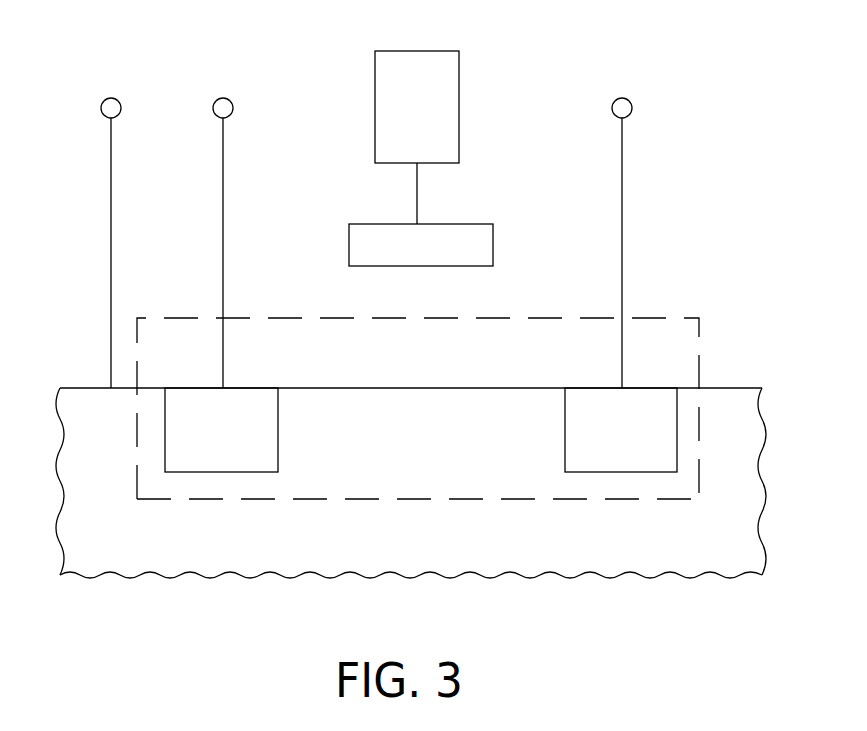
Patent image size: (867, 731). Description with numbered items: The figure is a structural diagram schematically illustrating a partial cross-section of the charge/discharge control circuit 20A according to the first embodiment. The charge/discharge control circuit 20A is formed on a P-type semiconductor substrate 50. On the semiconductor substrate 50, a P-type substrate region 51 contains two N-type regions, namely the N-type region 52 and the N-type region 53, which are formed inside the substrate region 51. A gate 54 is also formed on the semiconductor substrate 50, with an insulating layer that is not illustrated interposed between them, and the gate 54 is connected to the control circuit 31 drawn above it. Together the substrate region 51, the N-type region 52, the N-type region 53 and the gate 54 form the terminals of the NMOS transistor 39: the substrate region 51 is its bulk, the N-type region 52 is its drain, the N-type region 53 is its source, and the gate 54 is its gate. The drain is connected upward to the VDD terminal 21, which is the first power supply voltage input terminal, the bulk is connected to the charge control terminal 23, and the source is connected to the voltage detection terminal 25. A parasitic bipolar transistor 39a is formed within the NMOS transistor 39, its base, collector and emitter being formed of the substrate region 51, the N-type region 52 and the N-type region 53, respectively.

The charge/discharge control circuit 20A is at (752, 73).
The VDD terminal 21 is at (108, 98).
The charge control terminal 23 is at (220, 98).
The voltage detection terminal 25 is at (619, 98).
The control circuit 31 is at (395, 50).
The NMOS transistor 39 is at (663, 251).
The parasitic bipolar transistor 39a is at (537, 502).
The semiconductor substrate 50 is at (135, 551).
The substrate region 51 is at (332, 394).
The N-type region 52 is at (203, 392).
The N-type region 53 is at (598, 393).
The gate 54 is at (362, 228).